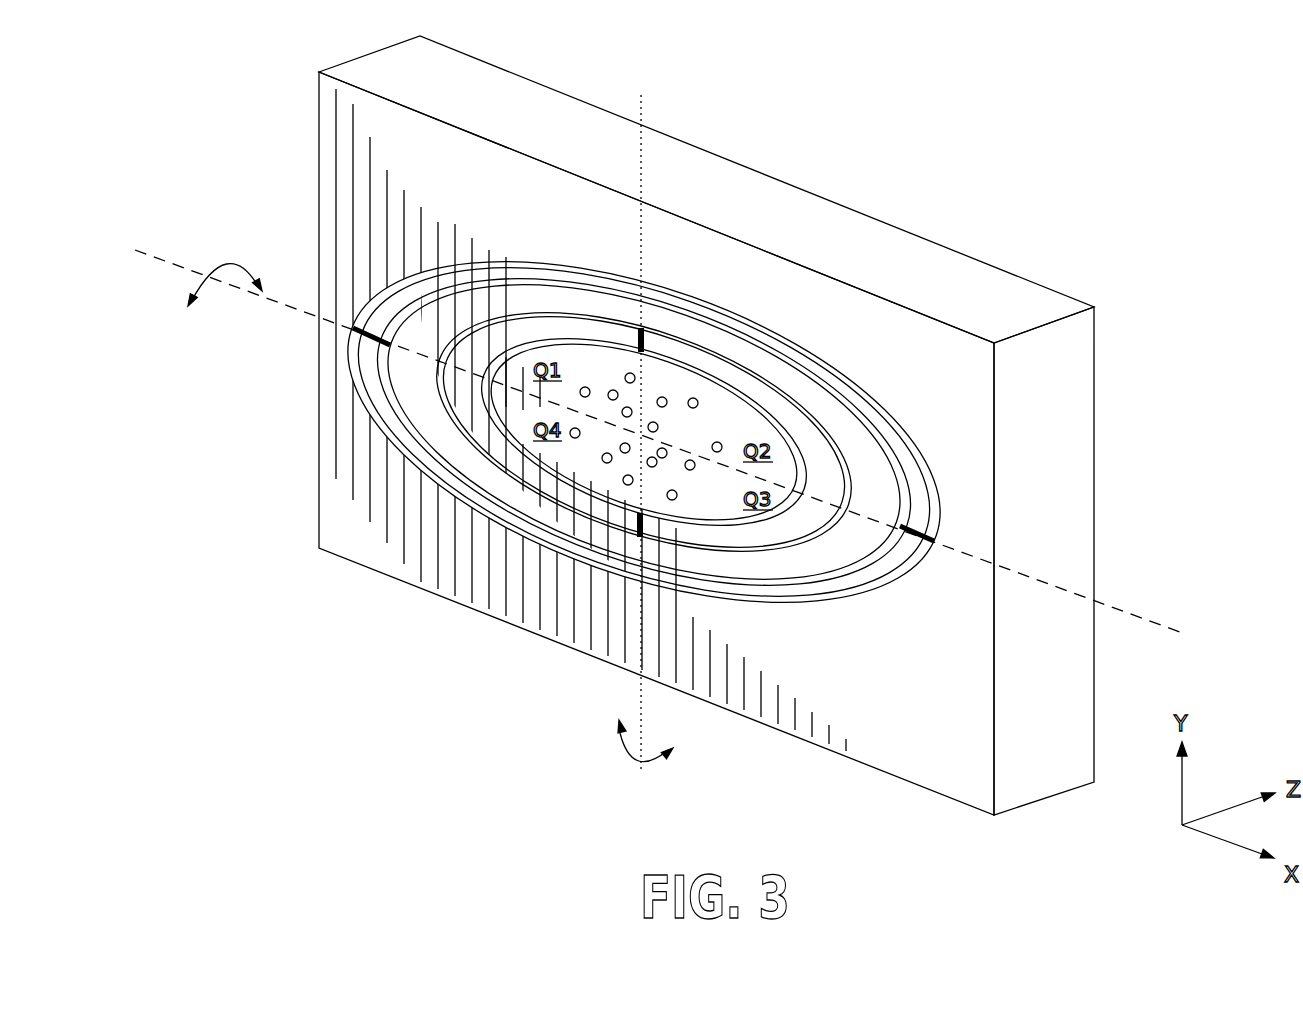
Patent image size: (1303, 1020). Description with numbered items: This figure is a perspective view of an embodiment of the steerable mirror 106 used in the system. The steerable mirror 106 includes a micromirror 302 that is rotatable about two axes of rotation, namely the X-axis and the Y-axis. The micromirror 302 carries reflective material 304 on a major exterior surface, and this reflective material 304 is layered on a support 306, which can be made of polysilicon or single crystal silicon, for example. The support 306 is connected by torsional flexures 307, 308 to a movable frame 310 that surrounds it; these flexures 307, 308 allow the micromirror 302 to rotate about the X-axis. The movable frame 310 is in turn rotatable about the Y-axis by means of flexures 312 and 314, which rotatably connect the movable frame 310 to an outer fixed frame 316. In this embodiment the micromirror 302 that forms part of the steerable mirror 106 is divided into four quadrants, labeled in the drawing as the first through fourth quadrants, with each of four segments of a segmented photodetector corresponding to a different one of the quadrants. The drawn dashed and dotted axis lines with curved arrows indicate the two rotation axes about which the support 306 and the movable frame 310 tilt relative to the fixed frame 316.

The steerable mirror 106 is at (1084, 170).
The micromirror 302 is at (723, 437).
The reflective material 304 is at (603, 370).
The support 306 is at (740, 390).
The torsional flexure 307 is at (647, 340).
The torsional flexure 308 is at (648, 521).
The movable frame 310 is at (845, 438).
The flexure 312 is at (374, 326).
The flexure 314 is at (914, 547).
The fixed frame 316 is at (962, 747).